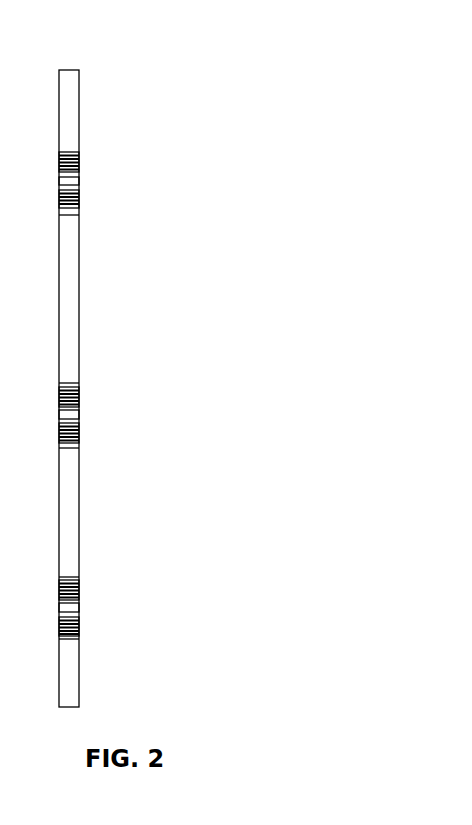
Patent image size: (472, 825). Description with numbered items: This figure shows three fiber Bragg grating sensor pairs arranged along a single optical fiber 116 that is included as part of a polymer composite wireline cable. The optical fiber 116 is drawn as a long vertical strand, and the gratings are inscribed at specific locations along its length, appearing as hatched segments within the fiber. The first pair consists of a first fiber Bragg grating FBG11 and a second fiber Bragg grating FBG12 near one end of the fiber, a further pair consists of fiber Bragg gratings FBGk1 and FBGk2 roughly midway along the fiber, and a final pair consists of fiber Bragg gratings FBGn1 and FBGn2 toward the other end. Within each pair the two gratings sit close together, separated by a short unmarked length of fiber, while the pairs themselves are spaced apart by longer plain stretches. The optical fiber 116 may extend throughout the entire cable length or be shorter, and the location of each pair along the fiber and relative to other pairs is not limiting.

The optical fiber 116 is at (124, 388).
The fiber Bragg grating FBG11 is at (114, 166).
The fiber Bragg grating FBG12 is at (114, 201).
The fiber Bragg grating FBGk1 is at (113, 397).
The fiber Bragg grating FBGk2 is at (113, 436).
The fiber Bragg grating FBGn1 is at (114, 592).
The fiber Bragg grating FBGn2 is at (114, 629).